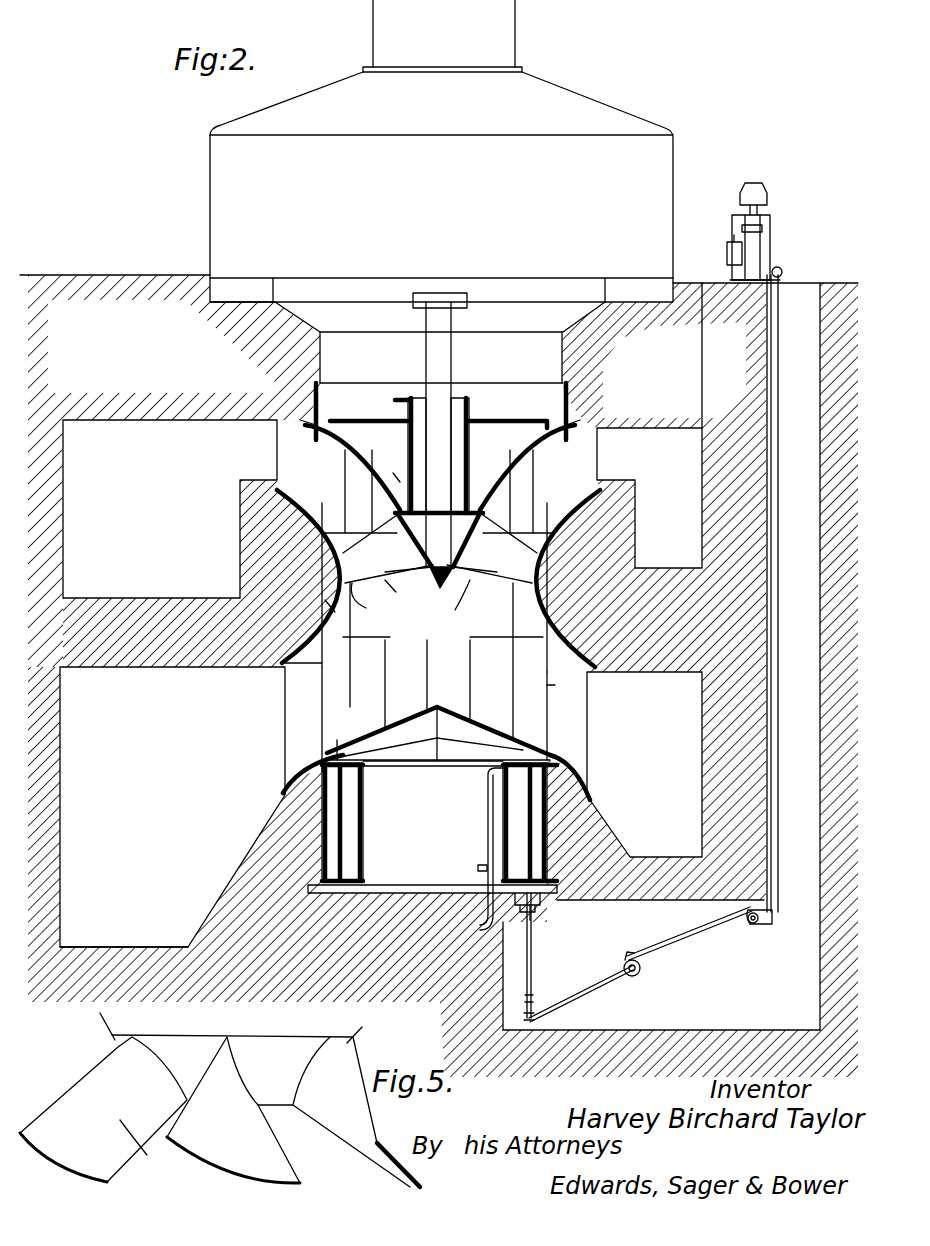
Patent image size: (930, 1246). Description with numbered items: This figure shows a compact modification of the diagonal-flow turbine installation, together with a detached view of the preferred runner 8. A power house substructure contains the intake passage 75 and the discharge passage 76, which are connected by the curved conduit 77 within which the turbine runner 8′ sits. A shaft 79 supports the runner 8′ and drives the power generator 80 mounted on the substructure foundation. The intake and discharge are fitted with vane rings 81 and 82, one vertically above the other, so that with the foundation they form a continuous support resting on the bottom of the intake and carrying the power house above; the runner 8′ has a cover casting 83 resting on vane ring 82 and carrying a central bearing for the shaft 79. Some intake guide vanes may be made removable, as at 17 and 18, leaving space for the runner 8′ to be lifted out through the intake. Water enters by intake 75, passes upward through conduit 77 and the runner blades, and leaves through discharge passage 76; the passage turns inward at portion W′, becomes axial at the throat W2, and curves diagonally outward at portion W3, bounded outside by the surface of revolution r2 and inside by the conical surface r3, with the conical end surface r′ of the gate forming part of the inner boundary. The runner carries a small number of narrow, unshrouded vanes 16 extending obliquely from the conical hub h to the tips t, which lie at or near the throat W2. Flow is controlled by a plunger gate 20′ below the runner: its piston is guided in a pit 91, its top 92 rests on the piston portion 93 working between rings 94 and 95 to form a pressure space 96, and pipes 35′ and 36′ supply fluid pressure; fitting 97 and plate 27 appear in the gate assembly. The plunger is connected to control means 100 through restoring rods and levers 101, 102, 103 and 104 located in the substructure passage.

In FIG. 2, the power generator 80 is at (441, 151).
In FIG. 2, the shaft 79 is at (441, 354).
In FIG. 2, the cover casting 83 is at (510, 421).
In FIG. 2, the vane ring 82 is at (292, 447).
In FIG. 2, the discharge passage 76 is at (382, 509).
In FIG. 2, the intake passage 75 is at (381, 807).
In FIG. 2, the vane ring 81 is at (296, 716).
In FIG. 2, the curved conduit 77 is at (453, 559).
In FIG. 2, the vanes 16 is at (440, 549).
In FIG. 5, the vanes 16 is at (213, 1140).
In FIG. 2, the axial flow portion W2 is at (407, 578).
In FIG. 2, the diagonally outward flow portion W3 is at (548, 545).
In FIG. 2, the entrance portion W′ is at (555, 685).
In FIG. 2, the top of plunger gate 92 is at (467, 726).
In FIG. 2, the removable guide vane 18 is at (298, 770).
In FIG. 2, the piston portion 93 is at (566, 823).
In FIG. 2, the pit 91 is at (366, 803).
In FIG. 2, the space 96 is at (518, 830).
In FIG. 2, the base plate 27 is at (345, 887).
In FIG. 2, the ring 95 is at (488, 805).
In FIG. 2, the pipe 35′ is at (480, 868).
In FIG. 2, the fitting 97 is at (545, 900).
In FIG. 2, the pipe 36′ is at (516, 908).
In FIG. 2, the restoring rod 101 is at (535, 970).
In FIG. 2, the restoring lever 102 is at (593, 992).
In FIG. 2, the restoring lever 103 is at (669, 937).
In FIG. 2, the restoring lever 104 is at (778, 912).
In FIG. 2, the control means 100 is at (755, 240).
In FIG. 2, the ring 94 is at (330, 840).
In FIG. 2, the removable guide vane 17 is at (292, 670).
In FIG. 2, the plunger gate 20′ is at (393, 730).
In FIG. 2, the conical end surface r′ is at (337, 740).
In FIG. 2, the surface of revolution r2 is at (335, 612).
In FIG. 2, the conical surface of revolution r3 is at (393, 473).
In FIG. 2, the runner 8′ is at (398, 590).
In FIG. 2, the tips t is at (361, 604).
In FIG. 5, the tips t is at (82, 1183).
In FIG. 2, the runner hub h is at (458, 602).
In FIG. 5, the runner hub h is at (288, 1046).
In FIG. 5, the turbine runner 8 is at (355, 1058).